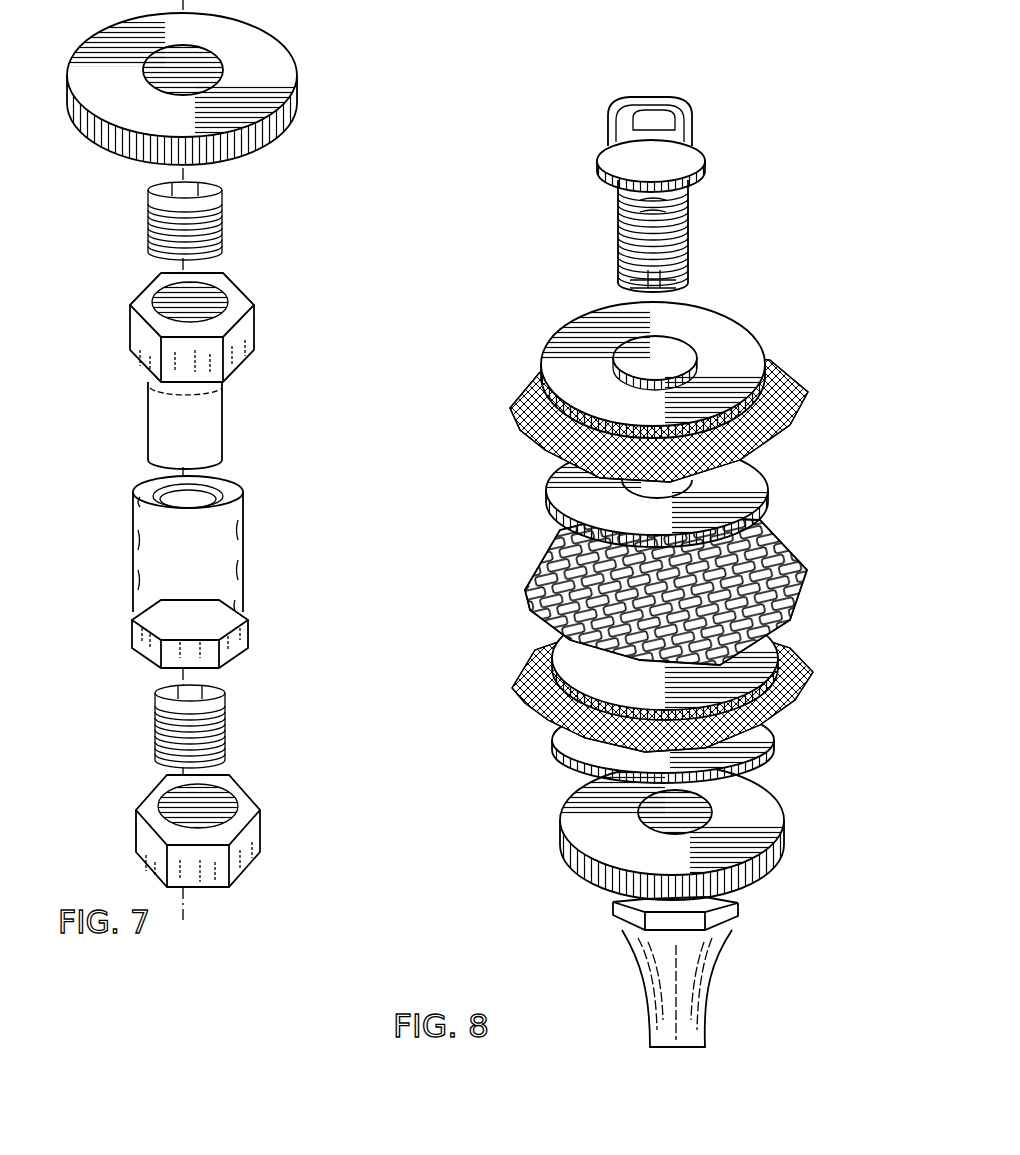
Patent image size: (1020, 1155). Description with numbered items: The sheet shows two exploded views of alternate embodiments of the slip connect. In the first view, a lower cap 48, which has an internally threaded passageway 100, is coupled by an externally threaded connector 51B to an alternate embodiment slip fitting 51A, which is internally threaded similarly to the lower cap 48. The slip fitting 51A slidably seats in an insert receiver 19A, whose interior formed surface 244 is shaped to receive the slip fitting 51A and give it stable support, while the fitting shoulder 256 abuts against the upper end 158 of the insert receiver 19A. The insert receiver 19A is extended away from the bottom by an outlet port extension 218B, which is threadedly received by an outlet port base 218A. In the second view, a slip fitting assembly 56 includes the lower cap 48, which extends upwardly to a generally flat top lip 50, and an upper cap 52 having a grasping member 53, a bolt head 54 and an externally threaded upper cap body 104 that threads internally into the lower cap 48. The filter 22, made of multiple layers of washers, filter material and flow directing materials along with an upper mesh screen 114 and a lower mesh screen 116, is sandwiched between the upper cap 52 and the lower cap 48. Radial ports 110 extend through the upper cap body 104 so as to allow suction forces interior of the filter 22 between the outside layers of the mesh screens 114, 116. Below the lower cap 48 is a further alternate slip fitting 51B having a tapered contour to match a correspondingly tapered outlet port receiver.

In FIG. 7, the lower cap 48 is at (282, 78).
In FIG. 8, the lower cap 48 is at (659, 832).
In FIG. 7, the externally threaded connector / slip fitting 51B is at (210, 192).
In FIG. 8, the externally threaded connector / slip fitting 51B is at (640, 958).
In FIG. 7, the fitting shoulder 256 is at (130, 358).
In FIG. 7, the slip fitting 51A is at (220, 380).
In FIG. 7, the upper end of insert receiver 158 is at (141, 495).
In FIG. 7, the interior formed surface 244 is at (208, 497).
In FIG. 7, the insert receiver 19A is at (211, 568).
In FIG. 7, the outlet port extension 218B is at (222, 720).
In FIG. 7, the outlet port base 218A is at (244, 806).
In FIG. 8, the slip fitting assembly 56 is at (669, 191).
In FIG. 8, the grasping member 53 is at (620, 116).
In FIG. 8, the upper cap 52 is at (598, 168).
In FIG. 8, the bolt head 54 is at (708, 168).
In FIG. 8, the upper cap body 104 is at (618, 236).
In FIG. 8, the radial ports 110 is at (628, 197).
In FIG. 8, the filter 22 is at (631, 538).
In FIG. 8, the upper mesh screen 114 is at (655, 417).
In FIG. 8, the lower mesh screen 116 is at (540, 690).
In FIG. 8, the internally threaded passageway 100 is at (645, 808).
In FIG. 8, the flat top lip 50 is at (572, 838).